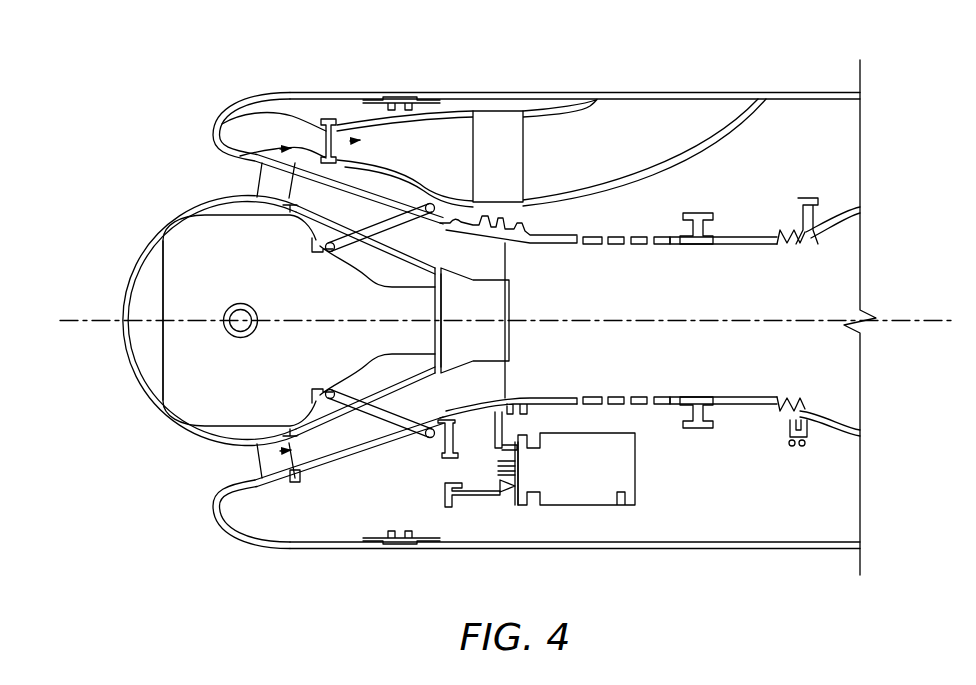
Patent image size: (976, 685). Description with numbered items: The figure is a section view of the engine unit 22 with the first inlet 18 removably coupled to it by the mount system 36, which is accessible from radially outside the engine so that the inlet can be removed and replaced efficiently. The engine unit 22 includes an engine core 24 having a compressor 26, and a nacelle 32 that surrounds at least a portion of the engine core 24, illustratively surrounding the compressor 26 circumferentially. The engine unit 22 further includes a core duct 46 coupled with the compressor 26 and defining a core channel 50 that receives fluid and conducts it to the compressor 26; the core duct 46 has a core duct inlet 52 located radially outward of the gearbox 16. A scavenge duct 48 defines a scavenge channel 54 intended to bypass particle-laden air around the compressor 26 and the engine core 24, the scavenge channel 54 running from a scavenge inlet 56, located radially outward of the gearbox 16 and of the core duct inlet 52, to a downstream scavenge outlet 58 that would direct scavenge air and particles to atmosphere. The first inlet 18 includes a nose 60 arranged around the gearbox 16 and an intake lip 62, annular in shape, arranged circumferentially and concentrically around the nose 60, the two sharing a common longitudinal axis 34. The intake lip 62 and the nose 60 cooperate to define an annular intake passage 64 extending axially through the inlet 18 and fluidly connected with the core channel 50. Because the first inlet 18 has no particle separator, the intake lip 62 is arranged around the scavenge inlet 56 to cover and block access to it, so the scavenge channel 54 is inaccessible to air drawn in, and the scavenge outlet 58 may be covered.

The gearbox 16 is at (212, 278).
The first inlet 18 is at (140, 399).
The engine unit 22 is at (834, 63).
The engine core 24 is at (831, 202).
The compressor 26 is at (646, 221).
The nacelle 32 is at (804, 89).
The longitudinal axis 34 is at (905, 318).
The mount system 36 is at (400, 87).
The core duct 46 is at (321, 471).
The scavenge duct 48 is at (263, 100).
The core channel 50 is at (233, 477).
The core duct inlet 52 is at (120, 305).
The scavenge channel 54 is at (228, 126).
The scavenge inlet 56 is at (282, 152).
The scavenge outlet 58 is at (661, 139).
The nose 60 is at (172, 213).
The intake lip 62 is at (216, 116).
The annular intake passage 64 is at (186, 155).